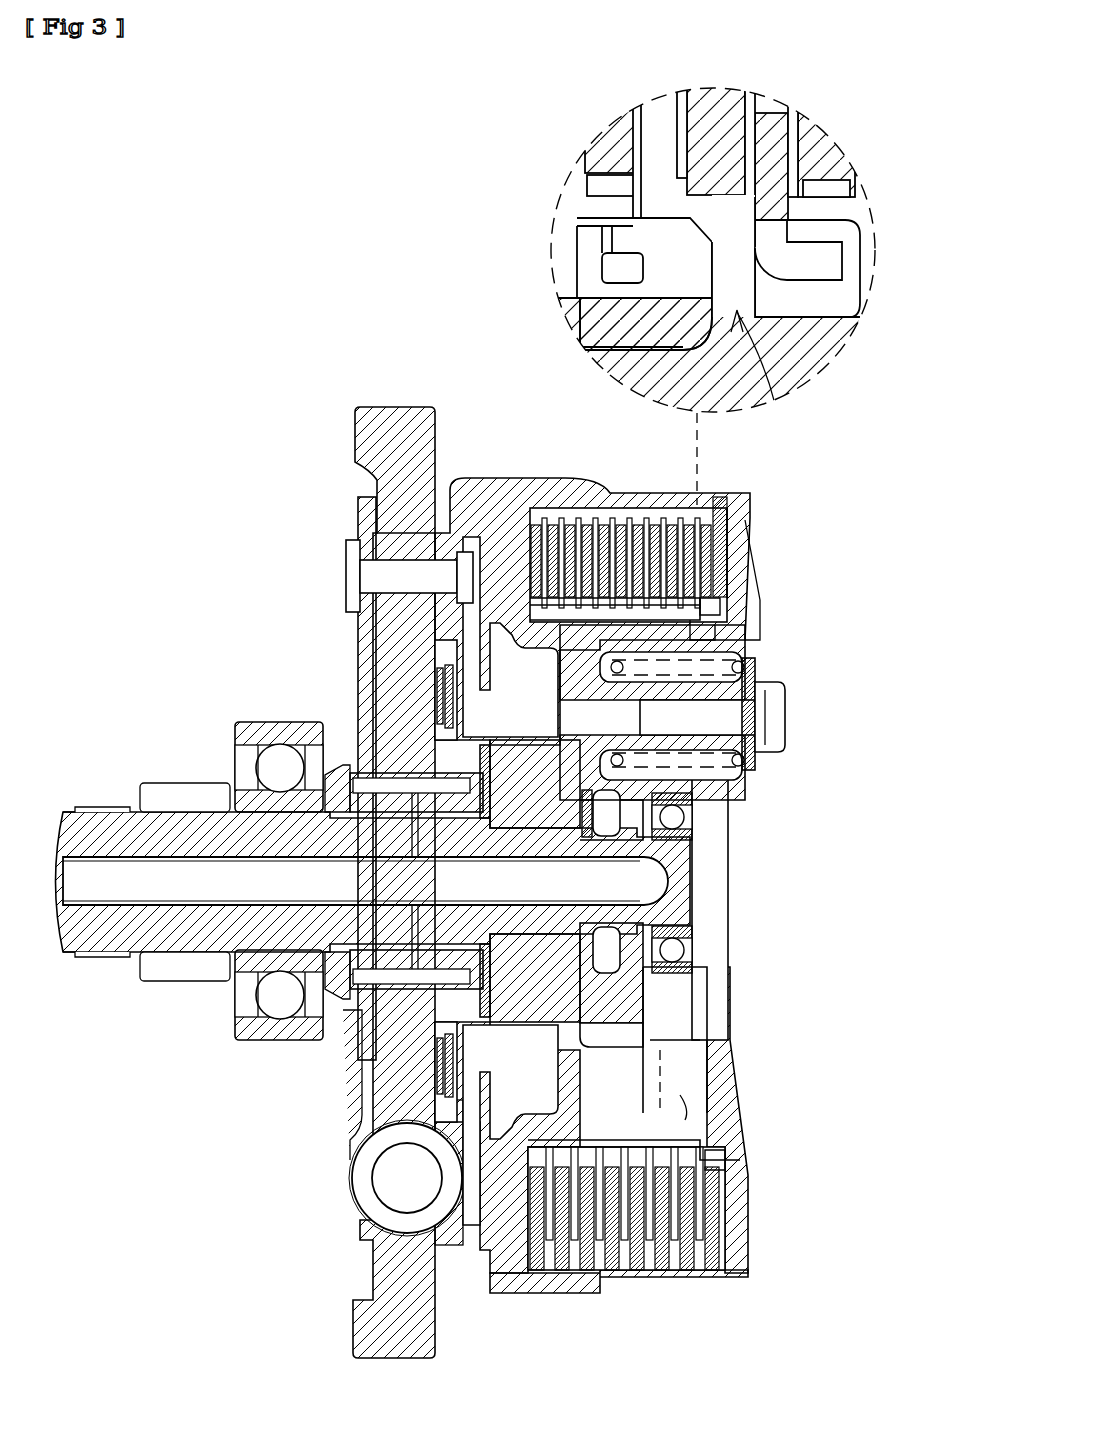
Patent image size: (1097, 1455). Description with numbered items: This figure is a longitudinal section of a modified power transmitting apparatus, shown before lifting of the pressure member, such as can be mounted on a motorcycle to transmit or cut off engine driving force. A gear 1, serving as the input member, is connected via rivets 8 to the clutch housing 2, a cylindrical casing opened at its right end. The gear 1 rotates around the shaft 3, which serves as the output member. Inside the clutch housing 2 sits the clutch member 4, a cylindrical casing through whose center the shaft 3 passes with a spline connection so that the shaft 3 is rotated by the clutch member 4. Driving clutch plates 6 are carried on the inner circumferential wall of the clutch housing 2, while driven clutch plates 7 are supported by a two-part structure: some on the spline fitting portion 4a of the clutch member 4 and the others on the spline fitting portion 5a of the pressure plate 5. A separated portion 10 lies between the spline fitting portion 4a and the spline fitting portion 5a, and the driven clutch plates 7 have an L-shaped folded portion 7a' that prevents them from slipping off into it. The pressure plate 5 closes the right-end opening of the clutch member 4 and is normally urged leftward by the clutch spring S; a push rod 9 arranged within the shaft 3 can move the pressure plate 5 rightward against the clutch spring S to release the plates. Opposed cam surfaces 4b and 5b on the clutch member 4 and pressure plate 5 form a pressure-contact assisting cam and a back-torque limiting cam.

The gear 1 is at (375, 460).
The clutch housing 2 is at (528, 480).
The shaft 3 is at (103, 830).
The clutch member 4 is at (515, 617).
The spline fitting portion 4a is at (680, 1130).
The cam surface 4b is at (720, 1068).
The pressure plate 5 is at (735, 585).
The spline fitting portion 5a is at (725, 1160).
The cam surface 5b is at (690, 1105).
The driving clutch plates 6 is at (650, 520).
The driven clutch plates 7 is at (585, 525).
The folded portion 7a' is at (711, 416).
The rivets 8 is at (345, 560).
The push rod 9 is at (118, 882).
The separated portion 10 is at (715, 630).
The clutch spring S is at (735, 770).